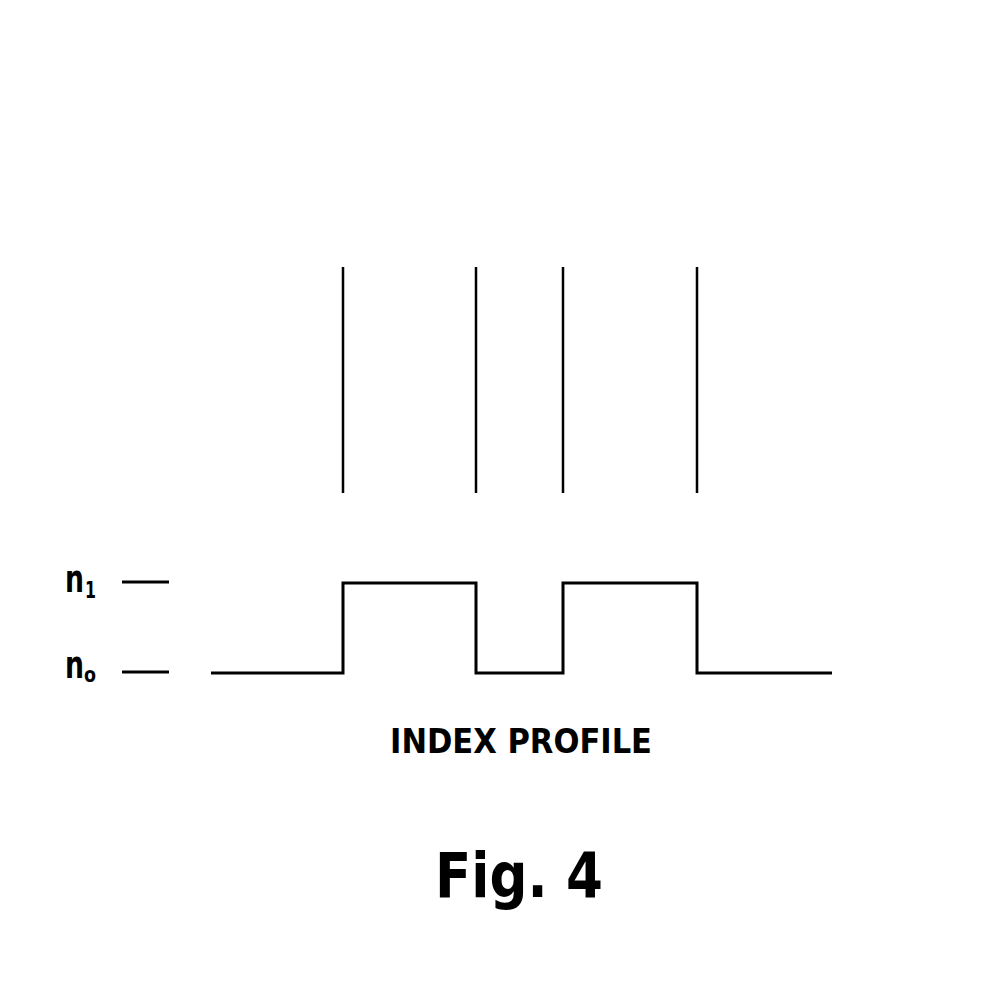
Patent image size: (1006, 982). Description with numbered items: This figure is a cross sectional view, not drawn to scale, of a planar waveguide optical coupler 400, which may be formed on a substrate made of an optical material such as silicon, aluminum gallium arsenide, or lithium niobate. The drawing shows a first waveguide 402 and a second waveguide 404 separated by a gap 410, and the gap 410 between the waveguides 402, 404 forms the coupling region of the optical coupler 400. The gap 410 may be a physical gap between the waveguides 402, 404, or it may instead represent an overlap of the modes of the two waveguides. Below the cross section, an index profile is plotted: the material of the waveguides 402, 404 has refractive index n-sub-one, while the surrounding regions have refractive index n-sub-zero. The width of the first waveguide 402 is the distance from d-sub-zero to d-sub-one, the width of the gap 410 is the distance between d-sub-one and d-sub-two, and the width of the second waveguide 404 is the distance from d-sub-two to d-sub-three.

The planar waveguide optical coupler 400 is at (870, 108).
The first waveguide 402 is at (410, 232).
The gap 410 is at (519, 232).
The second waveguide 404 is at (632, 232).